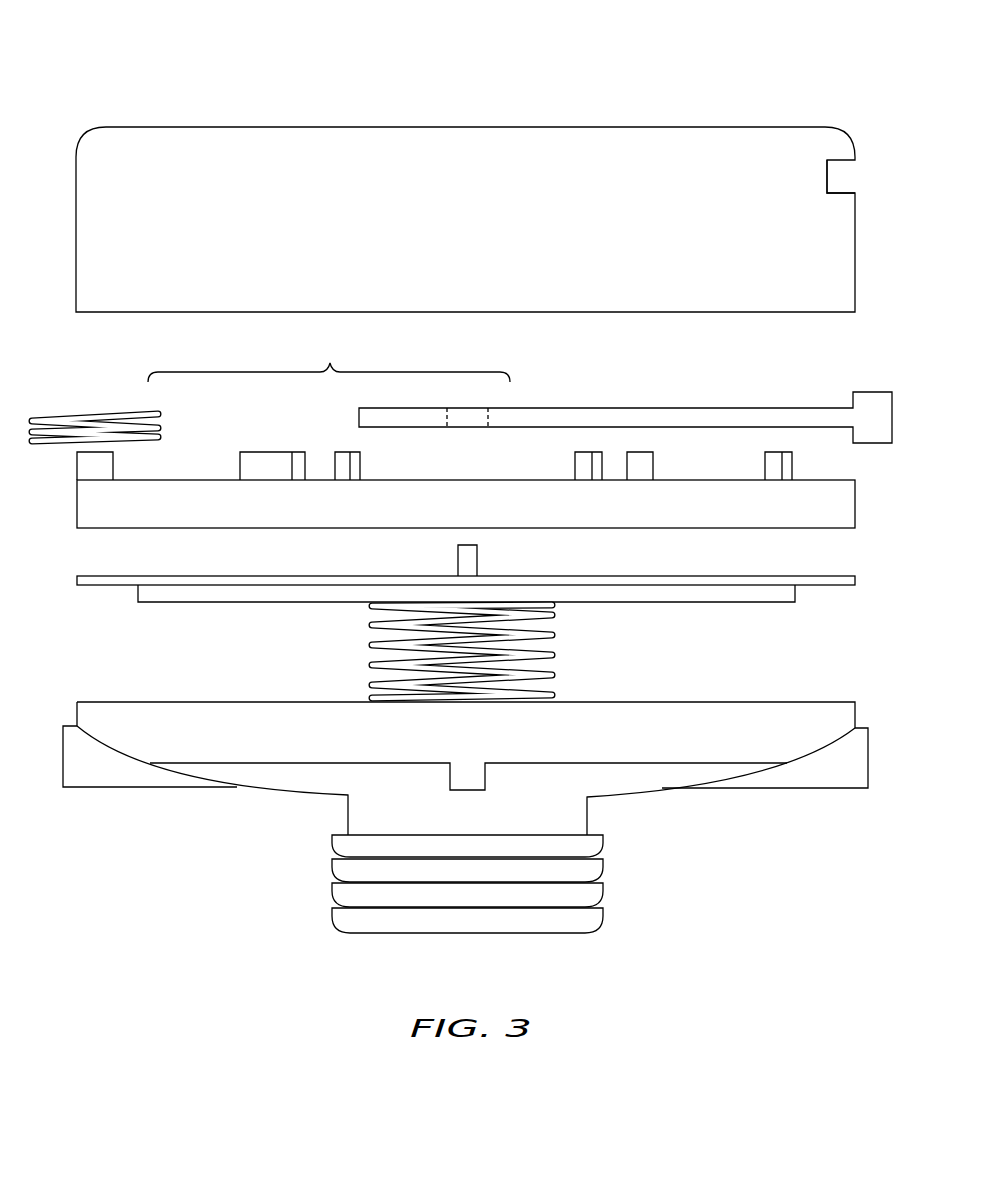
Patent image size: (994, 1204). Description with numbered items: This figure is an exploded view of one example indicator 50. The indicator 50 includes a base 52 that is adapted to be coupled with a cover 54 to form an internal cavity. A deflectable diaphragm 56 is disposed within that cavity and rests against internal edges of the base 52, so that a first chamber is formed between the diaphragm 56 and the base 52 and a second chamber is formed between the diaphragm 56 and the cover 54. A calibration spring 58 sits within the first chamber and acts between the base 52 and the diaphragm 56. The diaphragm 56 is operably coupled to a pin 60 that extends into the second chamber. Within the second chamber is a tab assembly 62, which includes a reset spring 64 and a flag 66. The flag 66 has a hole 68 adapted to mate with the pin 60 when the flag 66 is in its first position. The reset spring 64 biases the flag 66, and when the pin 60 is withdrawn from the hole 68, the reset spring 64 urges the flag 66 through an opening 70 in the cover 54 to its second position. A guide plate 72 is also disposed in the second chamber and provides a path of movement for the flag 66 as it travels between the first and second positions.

The indicator 50 is at (791, 43).
The base 52 is at (869, 758).
The cover 54 is at (857, 253).
The deflectable diaphragm 56 is at (718, 578).
The calibration spring 58 is at (553, 636).
The pin 60 is at (478, 560).
The tab assembly 62 is at (329, 357).
The reset spring 64 is at (96, 412).
The flag 66 is at (713, 407).
The hole 68 is at (465, 426).
The opening 70 is at (830, 176).
The guide plate 72 is at (856, 503).